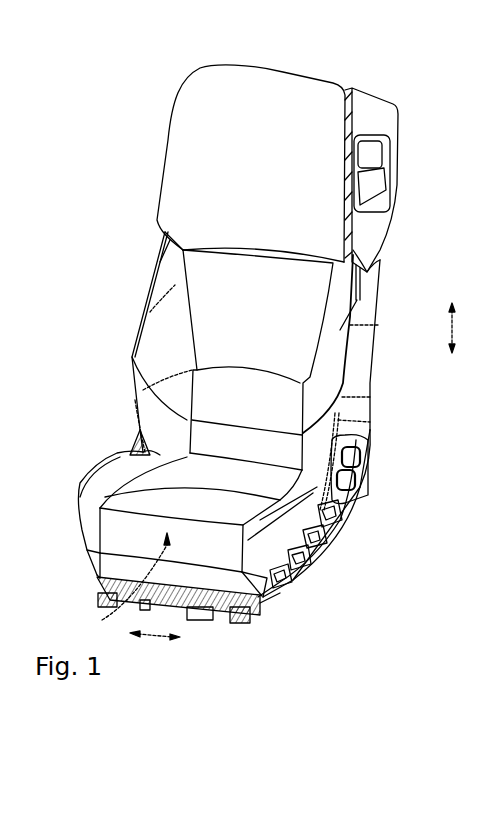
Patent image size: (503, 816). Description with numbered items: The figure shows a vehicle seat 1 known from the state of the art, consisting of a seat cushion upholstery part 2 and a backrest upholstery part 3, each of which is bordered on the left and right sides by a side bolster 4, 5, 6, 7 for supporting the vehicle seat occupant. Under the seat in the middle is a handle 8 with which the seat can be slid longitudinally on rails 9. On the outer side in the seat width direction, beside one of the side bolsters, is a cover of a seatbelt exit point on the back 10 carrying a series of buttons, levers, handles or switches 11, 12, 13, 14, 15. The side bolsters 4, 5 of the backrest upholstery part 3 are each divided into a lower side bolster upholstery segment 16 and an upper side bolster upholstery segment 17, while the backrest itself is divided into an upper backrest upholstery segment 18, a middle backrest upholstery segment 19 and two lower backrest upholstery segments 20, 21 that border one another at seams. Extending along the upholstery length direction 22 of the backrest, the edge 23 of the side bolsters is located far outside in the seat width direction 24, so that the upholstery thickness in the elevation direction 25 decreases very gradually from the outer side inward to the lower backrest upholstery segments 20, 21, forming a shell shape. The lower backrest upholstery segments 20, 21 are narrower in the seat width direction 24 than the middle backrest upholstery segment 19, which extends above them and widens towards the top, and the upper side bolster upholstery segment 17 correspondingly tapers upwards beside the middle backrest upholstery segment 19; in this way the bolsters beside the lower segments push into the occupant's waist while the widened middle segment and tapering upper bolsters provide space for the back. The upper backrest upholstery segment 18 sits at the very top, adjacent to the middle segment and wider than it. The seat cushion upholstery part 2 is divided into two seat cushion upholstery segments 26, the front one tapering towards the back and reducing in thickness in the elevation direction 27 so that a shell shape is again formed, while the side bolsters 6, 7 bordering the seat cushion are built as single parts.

The vehicle seat 1 is at (389, 452).
The seat cushion upholstery part 2 is at (318, 577).
The backrest upholstery part 3 is at (412, 176).
The side bolster 4 is at (145, 360).
The side bolster 5 is at (345, 397).
The side bolster 6 is at (100, 480).
The side bolster 7 is at (350, 500).
The handle 8 is at (190, 617).
The rails 9 is at (250, 623).
The cover of a seatbelt exit point on the back 10 is at (390, 112).
The button, lever, handle or switch 11 is at (285, 590).
The button, lever, handle or switch 12 is at (313, 562).
The button, lever, handle or switch 13 is at (333, 538).
The button, lever, handle or switch 14 is at (347, 520).
The button, lever, handle or switch 15 is at (362, 450).
The lower side bolster upholstery segment 16 is at (130, 410).
The upper side bolster upholstery segment 17 is at (160, 300).
The upper backrest upholstery segment 18 is at (177, 165).
The middle backrest upholstery segment 19 is at (187, 263).
The lower backrest upholstery segment 20 is at (150, 390).
The lower backrest upholstery segment 21 is at (143, 440).
The upholstery length direction 22 is at (463, 328).
The edge 23 is at (135, 330).
The seat width direction 24 is at (155, 645).
The elevation direction 25 is at (362, 292).
The seat cushion upholstery segments 26 is at (97, 550).
The elevation direction 27 is at (127, 581).